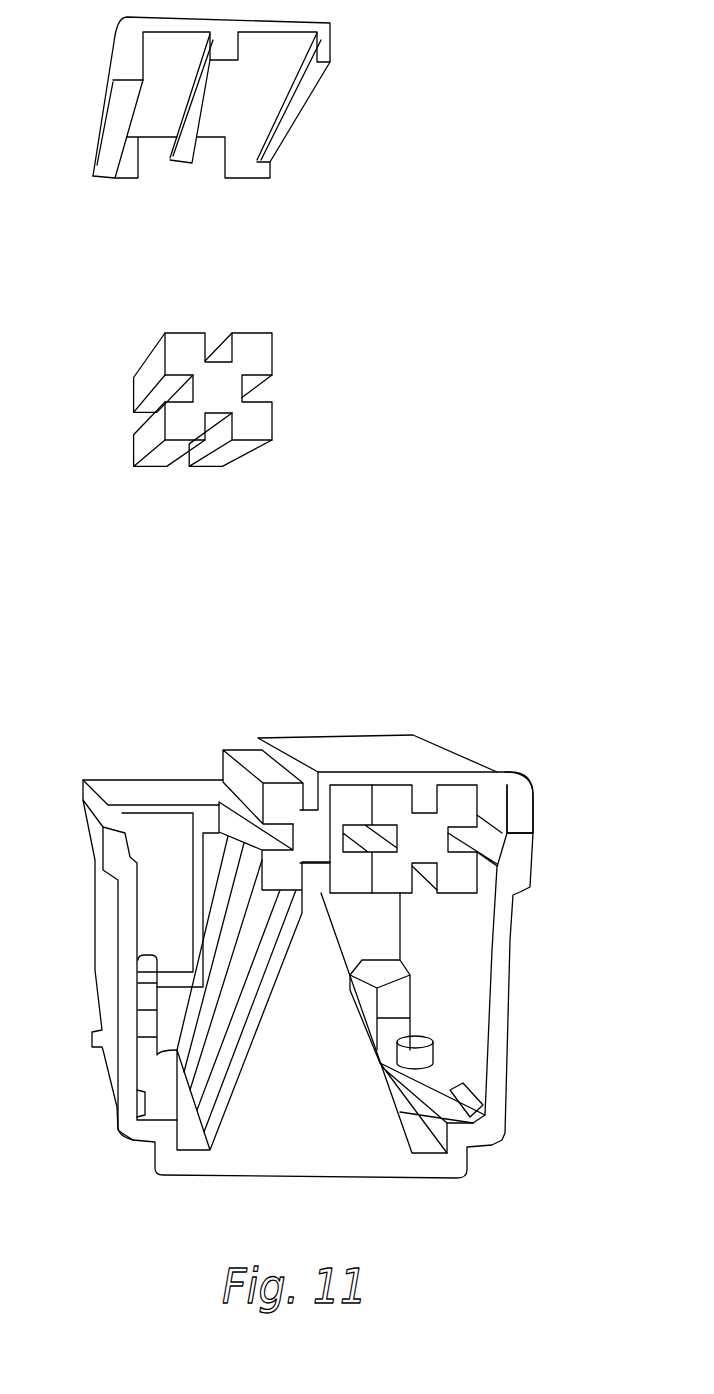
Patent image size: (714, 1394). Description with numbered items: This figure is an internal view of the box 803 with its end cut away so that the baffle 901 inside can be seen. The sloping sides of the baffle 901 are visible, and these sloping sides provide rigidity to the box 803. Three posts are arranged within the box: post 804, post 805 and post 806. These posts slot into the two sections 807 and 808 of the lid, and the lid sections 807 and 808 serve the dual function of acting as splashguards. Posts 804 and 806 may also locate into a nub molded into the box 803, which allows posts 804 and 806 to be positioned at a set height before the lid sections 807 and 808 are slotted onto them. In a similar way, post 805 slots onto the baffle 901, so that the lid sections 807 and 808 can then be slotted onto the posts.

The box 803 is at (342, 966).
The post 804 is at (175, 437).
The post 805 is at (242, 750).
The post 806 is at (473, 790).
The lid section 807 is at (105, 172).
The lid section 808 is at (347, 773).
The baffle 901 is at (153, 1148).